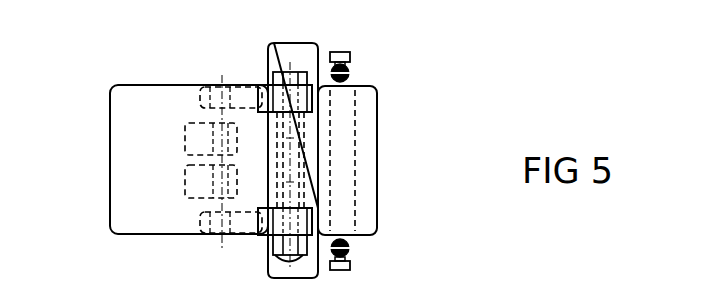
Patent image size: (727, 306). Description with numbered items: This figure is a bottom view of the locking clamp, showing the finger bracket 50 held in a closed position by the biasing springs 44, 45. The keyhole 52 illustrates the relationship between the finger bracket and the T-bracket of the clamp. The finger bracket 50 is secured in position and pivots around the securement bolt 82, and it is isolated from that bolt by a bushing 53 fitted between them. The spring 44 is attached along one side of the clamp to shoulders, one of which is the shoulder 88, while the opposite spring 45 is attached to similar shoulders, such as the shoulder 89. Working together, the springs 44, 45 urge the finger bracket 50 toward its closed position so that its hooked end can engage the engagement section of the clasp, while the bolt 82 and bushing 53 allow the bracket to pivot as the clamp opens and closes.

The finger bracket 50 is at (108, 203).
The keyhole 52 is at (220, 85).
The bushing 53 is at (313, 208).
The securement bolt 82 is at (278, 258).
The spring 45 is at (348, 72).
The shoulder 89 is at (350, 52).
The spring 44 is at (350, 248).
The shoulder 88 is at (348, 265).